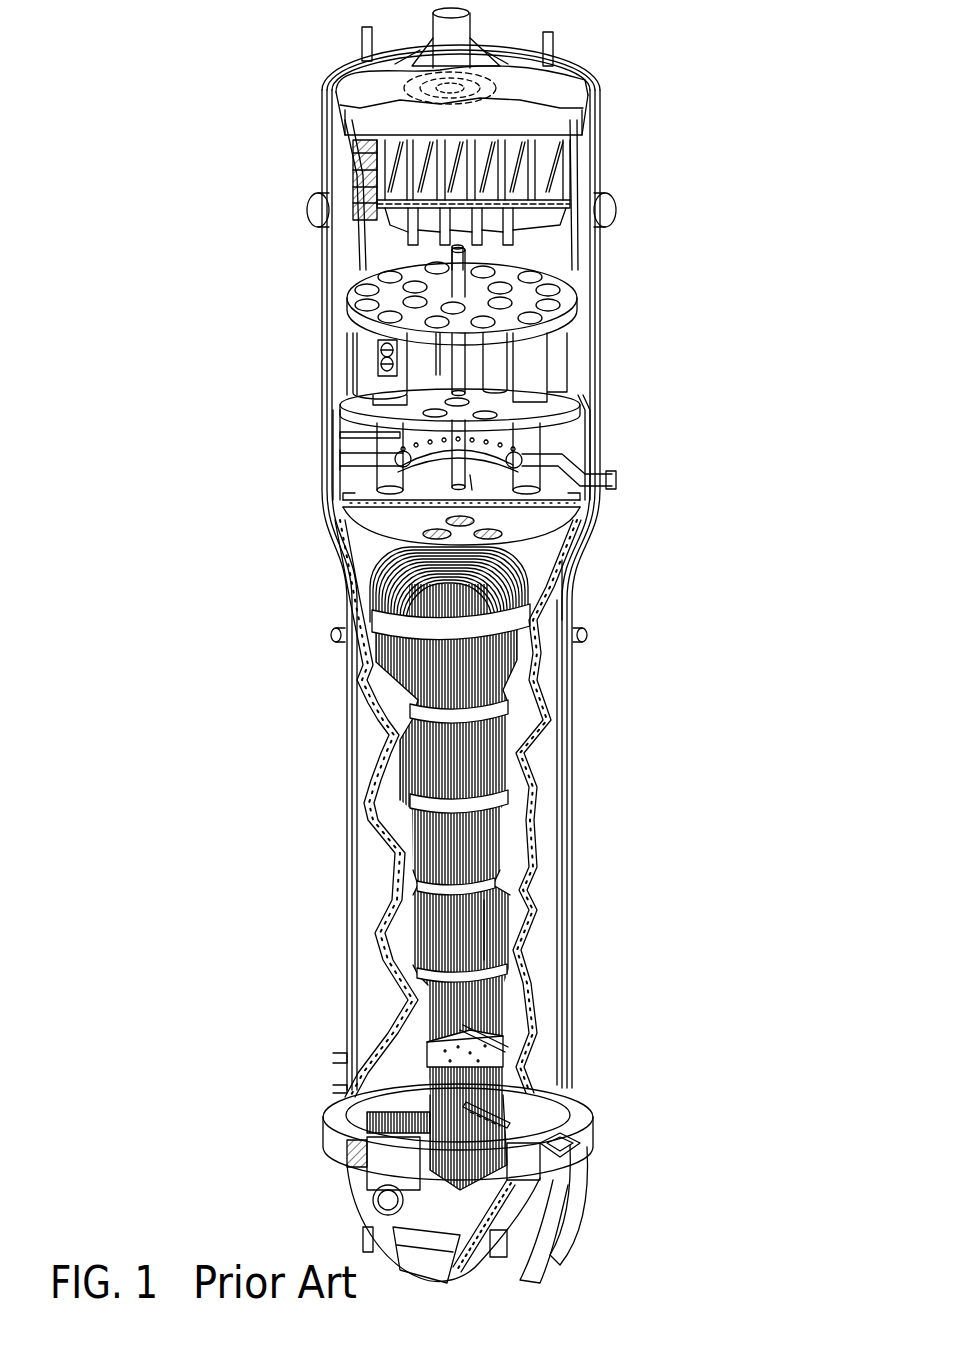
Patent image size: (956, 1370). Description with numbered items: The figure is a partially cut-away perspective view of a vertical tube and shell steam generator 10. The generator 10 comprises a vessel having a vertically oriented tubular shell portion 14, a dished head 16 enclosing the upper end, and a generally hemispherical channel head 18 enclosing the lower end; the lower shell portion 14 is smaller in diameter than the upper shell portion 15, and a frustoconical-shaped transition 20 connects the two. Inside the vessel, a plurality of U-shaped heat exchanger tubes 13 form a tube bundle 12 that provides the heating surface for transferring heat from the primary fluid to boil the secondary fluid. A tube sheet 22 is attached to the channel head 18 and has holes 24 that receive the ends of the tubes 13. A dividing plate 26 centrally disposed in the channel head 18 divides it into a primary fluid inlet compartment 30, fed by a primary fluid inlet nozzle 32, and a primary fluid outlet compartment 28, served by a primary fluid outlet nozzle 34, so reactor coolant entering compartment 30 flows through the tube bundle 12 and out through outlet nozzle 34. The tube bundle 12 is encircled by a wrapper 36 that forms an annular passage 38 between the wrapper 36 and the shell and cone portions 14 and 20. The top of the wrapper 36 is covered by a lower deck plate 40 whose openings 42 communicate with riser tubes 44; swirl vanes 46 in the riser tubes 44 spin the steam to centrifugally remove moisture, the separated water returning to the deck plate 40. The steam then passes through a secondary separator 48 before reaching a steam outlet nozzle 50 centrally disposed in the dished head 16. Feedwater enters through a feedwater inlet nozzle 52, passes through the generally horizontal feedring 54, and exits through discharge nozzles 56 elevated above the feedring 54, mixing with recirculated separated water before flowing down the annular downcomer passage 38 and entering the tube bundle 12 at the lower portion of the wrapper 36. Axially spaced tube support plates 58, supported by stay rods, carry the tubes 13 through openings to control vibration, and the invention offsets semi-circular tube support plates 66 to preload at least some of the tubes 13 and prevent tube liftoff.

The steam generator 10 is at (607, 375).
The tube bundle 12 is at (497, 942).
The U-shaped heat exchanger tubes 13 is at (487, 910).
The tubular shell portion 14 is at (560, 860).
The upper shell portion 15 is at (597, 331).
The dished head 16 is at (585, 72).
The channel head 18 is at (565, 1180).
The frustoconical-shaped transition 20 is at (575, 605).
The tube sheet 22 is at (385, 1170).
The holes 24 is at (557, 1200).
The dividing plate 26 is at (428, 1220).
The primary fluid outlet compartment 28 is at (370, 1208).
The primary fluid inlet compartment 30 is at (555, 1222).
The primary fluid inlet nozzle 32 is at (560, 1258).
The primary fluid outlet nozzle 34 is at (438, 1270).
The wrapper 36 is at (395, 692).
The annular passage 38 is at (515, 757).
The lower deck plate 40 is at (395, 527).
The openings 42 is at (508, 540).
The riser tubes 44 is at (395, 478).
The swirl vanes 46 is at (388, 370).
The secondary separator 48 is at (556, 180).
The steam outlet nozzle 50 is at (470, 28).
The feedwater inlet nozzle 52 is at (610, 472).
The feedring 54 is at (494, 470).
The discharge nozzles 56 is at (358, 448).
The tube support plates 58 is at (425, 632).
The semi-circular tube support plates 66 is at (432, 877).